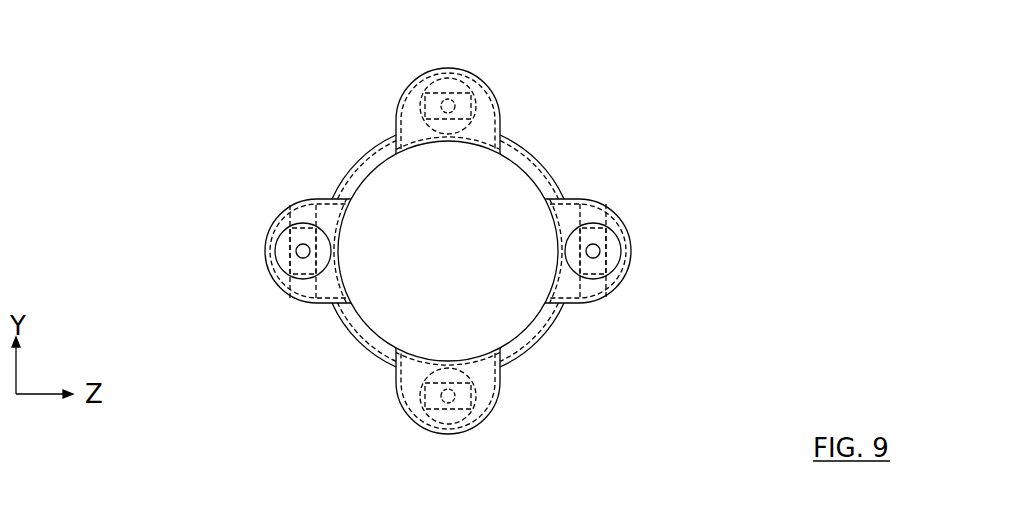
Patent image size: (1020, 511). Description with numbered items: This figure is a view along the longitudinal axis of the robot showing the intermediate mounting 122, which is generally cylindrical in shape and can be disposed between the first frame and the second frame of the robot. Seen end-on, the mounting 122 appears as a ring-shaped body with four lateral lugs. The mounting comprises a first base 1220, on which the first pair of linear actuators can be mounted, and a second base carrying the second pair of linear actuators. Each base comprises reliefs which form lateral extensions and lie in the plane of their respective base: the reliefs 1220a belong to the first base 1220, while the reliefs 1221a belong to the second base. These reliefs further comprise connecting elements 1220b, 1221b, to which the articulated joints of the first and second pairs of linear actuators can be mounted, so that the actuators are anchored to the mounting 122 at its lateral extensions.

The mounting 122 is at (429, 247).
The first base 1220 is at (350, 170).
The relief 1220a is at (277, 268).
The connecting element 1220b is at (297, 263).
The relief 1221a is at (478, 88).
The connecting element 1221b is at (462, 112).